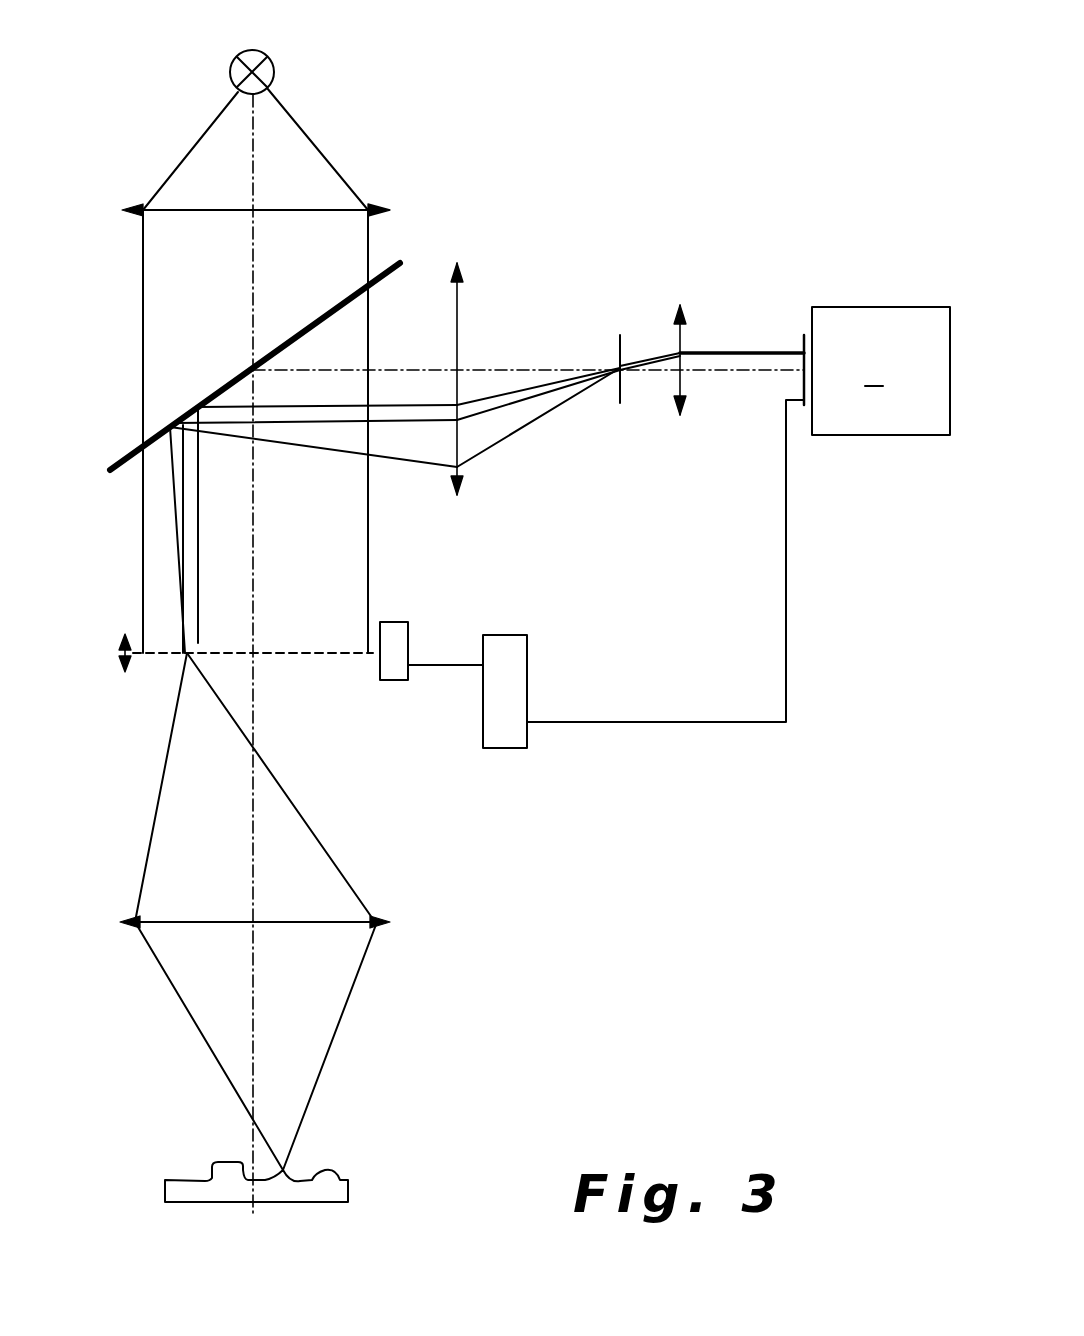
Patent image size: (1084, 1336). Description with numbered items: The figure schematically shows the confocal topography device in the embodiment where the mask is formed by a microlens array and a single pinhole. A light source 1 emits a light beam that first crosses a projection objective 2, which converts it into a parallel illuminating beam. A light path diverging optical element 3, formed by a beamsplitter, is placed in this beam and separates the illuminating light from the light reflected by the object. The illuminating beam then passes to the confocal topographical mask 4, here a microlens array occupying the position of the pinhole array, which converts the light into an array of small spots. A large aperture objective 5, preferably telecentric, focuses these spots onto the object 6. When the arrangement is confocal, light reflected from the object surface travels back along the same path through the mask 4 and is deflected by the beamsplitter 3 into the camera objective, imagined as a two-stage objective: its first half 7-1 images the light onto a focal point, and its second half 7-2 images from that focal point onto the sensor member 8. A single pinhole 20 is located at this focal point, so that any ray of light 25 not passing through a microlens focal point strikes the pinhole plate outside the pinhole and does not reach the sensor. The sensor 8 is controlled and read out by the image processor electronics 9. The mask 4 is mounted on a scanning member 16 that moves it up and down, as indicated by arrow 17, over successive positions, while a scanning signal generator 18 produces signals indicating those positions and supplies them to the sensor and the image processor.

The light source 1 is at (276, 68).
The projection objective 2 is at (370, 207).
The light path diverging optical element 3 is at (383, 275).
The confocal topographical mask 4 is at (300, 655).
The large aperture objective 5 is at (376, 918).
The object 6 is at (350, 1190).
The first half of camera objective 7-1 is at (463, 482).
The second half of camera objective 7-2 is at (685, 387).
The sensor member 8 is at (800, 388).
The image processor electronics 9 is at (881, 371).
The scanning member 16 is at (395, 672).
The arrow 17 is at (118, 655).
The scanning signal generator 18 is at (513, 665).
The single pinhole 20 is at (620, 345).
The ray of light 25 is at (552, 420).